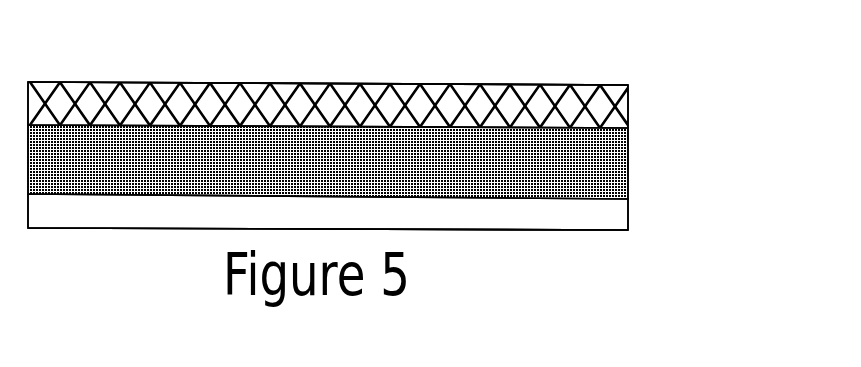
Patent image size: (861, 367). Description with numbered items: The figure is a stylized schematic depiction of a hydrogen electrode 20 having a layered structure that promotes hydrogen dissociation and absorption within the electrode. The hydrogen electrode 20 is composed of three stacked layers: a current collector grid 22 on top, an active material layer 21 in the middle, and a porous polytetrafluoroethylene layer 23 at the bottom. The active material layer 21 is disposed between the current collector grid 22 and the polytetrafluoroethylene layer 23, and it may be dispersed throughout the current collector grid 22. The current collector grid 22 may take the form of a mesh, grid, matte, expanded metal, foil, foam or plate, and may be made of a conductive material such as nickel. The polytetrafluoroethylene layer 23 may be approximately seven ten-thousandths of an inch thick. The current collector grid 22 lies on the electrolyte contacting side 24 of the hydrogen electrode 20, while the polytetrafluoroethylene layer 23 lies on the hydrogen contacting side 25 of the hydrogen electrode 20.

The hydrogen electrode 20 is at (642, 280).
The active material layer 21 is at (628, 159).
The current collector grid 22 is at (618, 109).
The porous polytetrafluoroethylene layer 23 is at (612, 219).
The electrolyte contacting side 24 is at (426, 76).
The hydrogen contacting side 25 is at (497, 238).